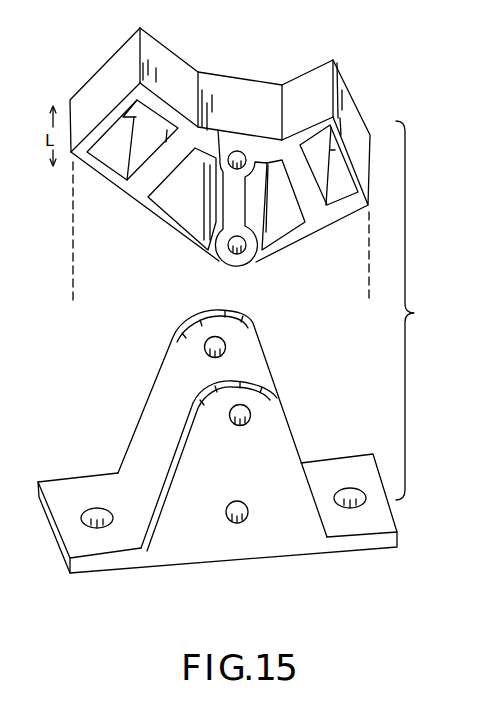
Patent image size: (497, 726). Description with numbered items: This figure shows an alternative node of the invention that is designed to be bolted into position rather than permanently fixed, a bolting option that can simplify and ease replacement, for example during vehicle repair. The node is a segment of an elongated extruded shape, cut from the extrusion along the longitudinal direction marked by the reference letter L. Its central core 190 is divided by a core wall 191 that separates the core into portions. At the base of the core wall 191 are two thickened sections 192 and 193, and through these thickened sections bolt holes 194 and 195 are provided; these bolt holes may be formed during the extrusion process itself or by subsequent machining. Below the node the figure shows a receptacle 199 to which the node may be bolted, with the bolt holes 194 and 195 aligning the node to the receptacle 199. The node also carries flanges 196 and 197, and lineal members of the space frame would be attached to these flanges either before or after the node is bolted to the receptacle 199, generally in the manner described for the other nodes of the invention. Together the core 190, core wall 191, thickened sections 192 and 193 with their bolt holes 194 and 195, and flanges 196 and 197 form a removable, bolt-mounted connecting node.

The central core 190 is at (236, 157).
The core wall 191 is at (227, 186).
The thickened section 192 is at (216, 258).
The thickened section 193 is at (220, 152).
The bolt hole 194 is at (243, 252).
The bolt hole 195 is at (233, 151).
The flange 196 is at (345, 70).
The flange 197 is at (116, 46).
The receptacle 199 is at (272, 372).